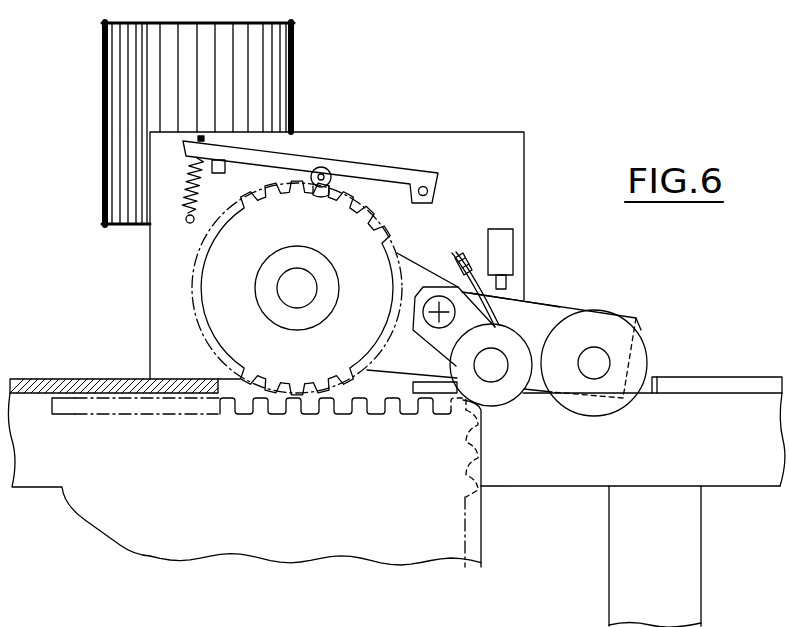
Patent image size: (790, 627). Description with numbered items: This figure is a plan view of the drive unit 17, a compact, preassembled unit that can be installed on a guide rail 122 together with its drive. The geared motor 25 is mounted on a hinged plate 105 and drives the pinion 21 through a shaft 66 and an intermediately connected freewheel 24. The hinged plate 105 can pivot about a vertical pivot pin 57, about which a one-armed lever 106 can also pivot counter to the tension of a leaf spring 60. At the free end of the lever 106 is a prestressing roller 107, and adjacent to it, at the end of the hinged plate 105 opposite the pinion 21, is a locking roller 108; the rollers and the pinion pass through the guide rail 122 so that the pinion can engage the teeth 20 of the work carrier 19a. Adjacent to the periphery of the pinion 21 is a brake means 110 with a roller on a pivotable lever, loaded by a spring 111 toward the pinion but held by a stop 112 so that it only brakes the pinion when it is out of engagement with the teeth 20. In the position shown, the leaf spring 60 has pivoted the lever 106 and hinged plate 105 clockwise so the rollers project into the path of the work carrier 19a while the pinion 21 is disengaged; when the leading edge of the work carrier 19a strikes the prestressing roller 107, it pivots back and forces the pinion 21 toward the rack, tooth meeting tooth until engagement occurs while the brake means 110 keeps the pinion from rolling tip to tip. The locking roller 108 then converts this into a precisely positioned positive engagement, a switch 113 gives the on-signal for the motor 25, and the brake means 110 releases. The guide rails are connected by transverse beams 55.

The drive unit 17 is at (551, 98).
The work carrier 19a is at (267, 506).
The teeth 20 is at (328, 413).
The pinion 21 is at (337, 214).
The freewheel 24 is at (275, 268).
The geared motor 25 is at (118, 110).
The transverse beam 55 is at (688, 535).
The vertical pivot pin 57 is at (423, 326).
The leaf spring 60 is at (518, 301).
The shaft 66 is at (295, 276).
The hinged plate 105 is at (543, 312).
The one-armed lever 106 is at (425, 288).
The prestressing roller 107 is at (505, 404).
The locking roller 108 is at (637, 352).
The brake means 110 is at (322, 168).
The spring 111 is at (186, 204).
The stop 112 is at (222, 167).
The switch 113 is at (503, 250).
The guide rail 122 is at (33, 378).